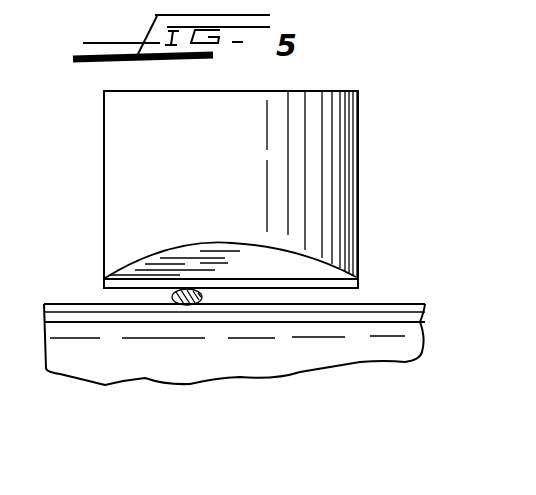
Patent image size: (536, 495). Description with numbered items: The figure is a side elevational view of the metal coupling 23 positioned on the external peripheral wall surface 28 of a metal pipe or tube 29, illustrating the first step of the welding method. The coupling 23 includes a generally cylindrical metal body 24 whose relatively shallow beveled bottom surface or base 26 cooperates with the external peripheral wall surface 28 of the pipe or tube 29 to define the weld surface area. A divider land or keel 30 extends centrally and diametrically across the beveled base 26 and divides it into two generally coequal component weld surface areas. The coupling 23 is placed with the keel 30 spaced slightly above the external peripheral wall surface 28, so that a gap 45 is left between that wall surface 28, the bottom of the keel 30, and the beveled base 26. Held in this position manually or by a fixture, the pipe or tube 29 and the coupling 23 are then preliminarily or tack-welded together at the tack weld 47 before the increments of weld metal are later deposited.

The metal coupling 23 is at (357, 153).
The generally cylindrical metal body 24 is at (359, 121).
The beveled bottom surface or base 26 is at (222, 252).
The external peripheral wall surface 28 is at (384, 304).
The metal pipe or tube 29 is at (412, 325).
The divider land or keel 30 is at (276, 283).
The gap 45 is at (326, 291).
The tack weld 47 is at (203, 292).